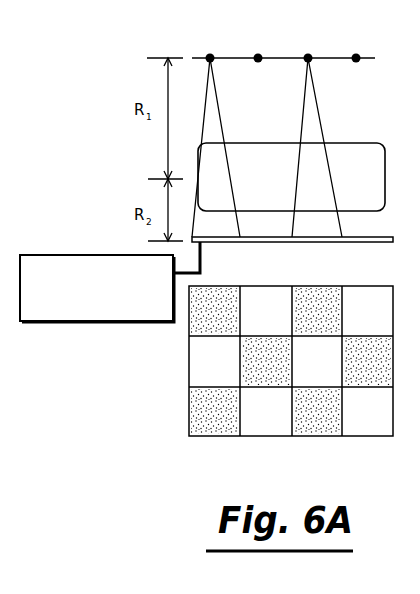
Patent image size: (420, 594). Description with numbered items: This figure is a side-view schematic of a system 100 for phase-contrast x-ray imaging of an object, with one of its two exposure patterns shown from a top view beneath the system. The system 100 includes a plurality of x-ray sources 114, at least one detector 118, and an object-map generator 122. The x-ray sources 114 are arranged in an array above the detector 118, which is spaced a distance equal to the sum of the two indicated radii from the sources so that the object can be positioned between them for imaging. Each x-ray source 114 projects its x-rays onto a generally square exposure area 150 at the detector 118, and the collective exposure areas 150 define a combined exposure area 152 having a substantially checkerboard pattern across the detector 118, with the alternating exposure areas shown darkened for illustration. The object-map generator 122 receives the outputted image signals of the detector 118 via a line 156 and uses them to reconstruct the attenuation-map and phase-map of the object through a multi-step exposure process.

The system for phase-contrast x-ray imaging 100 is at (146, 44).
The x-ray sources 114 is at (210, 58).
The detector 118 is at (352, 242).
The object-map generator 122 is at (81, 323).
The exposure area 150 is at (197, 326).
The combined exposure area 152 is at (176, 449).
The line 156 is at (202, 263).